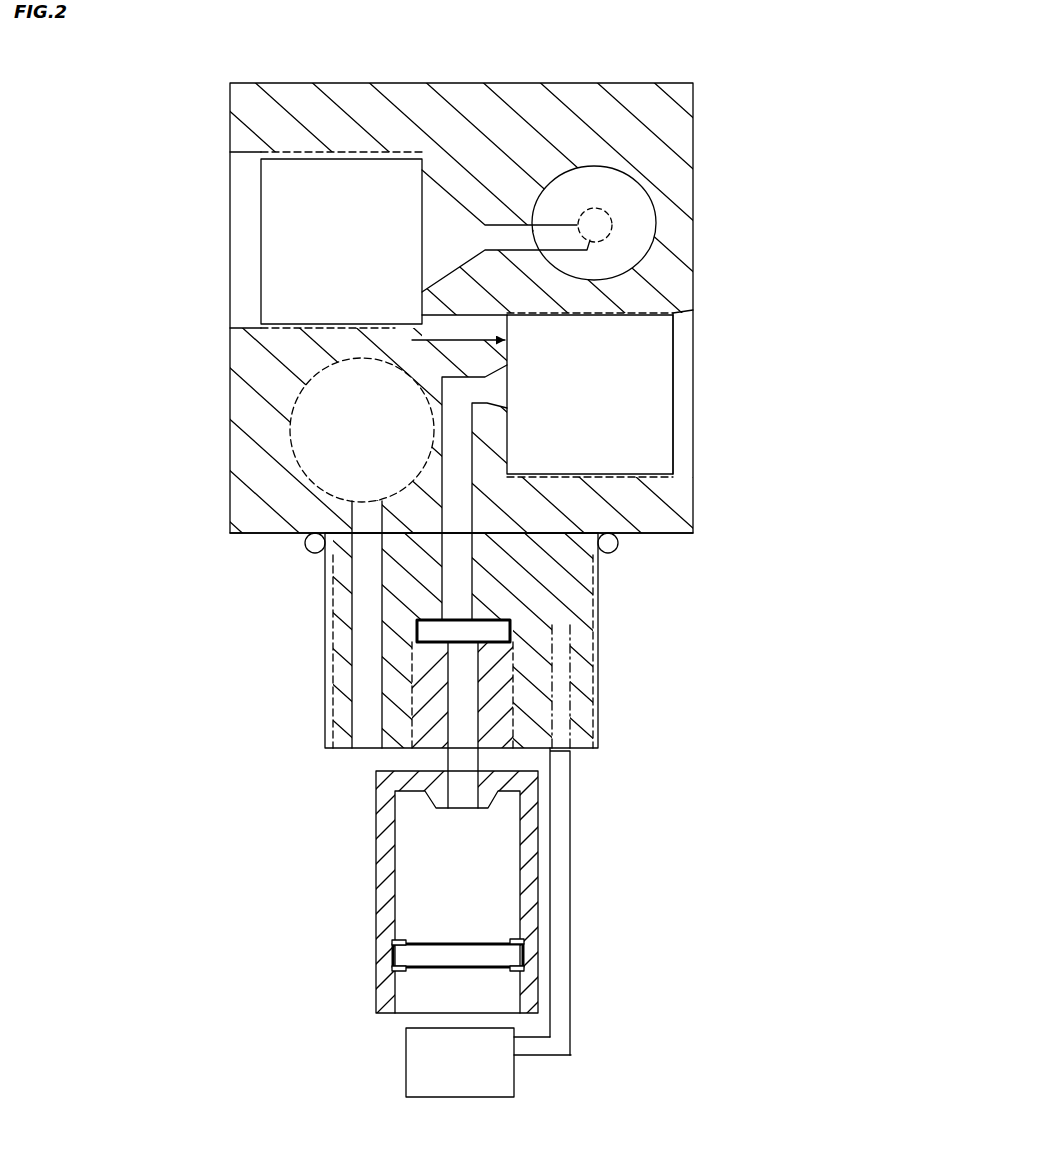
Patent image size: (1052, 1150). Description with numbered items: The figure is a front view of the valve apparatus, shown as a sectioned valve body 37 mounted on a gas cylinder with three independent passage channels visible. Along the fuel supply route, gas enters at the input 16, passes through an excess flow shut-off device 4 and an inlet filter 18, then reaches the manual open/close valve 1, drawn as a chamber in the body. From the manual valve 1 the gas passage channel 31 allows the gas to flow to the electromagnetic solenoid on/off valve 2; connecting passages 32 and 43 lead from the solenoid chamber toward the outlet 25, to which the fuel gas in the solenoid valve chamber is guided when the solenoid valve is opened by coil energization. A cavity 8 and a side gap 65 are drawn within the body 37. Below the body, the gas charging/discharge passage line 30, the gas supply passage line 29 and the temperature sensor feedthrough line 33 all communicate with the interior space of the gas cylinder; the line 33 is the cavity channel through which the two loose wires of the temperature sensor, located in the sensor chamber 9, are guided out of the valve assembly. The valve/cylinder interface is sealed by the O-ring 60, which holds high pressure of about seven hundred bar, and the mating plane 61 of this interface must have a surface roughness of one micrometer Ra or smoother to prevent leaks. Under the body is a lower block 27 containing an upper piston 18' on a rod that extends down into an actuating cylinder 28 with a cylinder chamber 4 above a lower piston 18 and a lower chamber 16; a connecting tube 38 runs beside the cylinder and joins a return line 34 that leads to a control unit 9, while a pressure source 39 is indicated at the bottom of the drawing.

The valve housing block 37 is at (692, 68).
The electromagnetic solenoid on/off valve 2 is at (285, 180).
The upper connecting passage 32 is at (450, 195).
The lower connecting passage 43 is at (505, 218).
The outlet 25 is at (647, 195).
The gas passage channel 31 is at (509, 307).
The side gap 65 is at (684, 318).
The manual open/close valve 1 is at (656, 388).
The cylindrical cavity 8 is at (302, 419).
The mating plane 61 is at (254, 531).
The O-ring 60 is at (303, 543).
The gas supply passage line 29 is at (476, 496).
The cylinder block 27 is at (601, 617).
The gas charging/discharge passage line 30 is at (349, 601).
The upper piston 18' is at (361, 714).
The temperature sensor feedthrough line 33 is at (576, 715).
The connecting tube 38 is at (572, 757).
The actuating cylinder 28 is at (526, 868).
The excess flow shut-off device 4 is at (424, 868).
The inlet filter 18 is at (542, 955).
The input 16 is at (446, 1008).
The return line 34 is at (575, 1018).
The sensor chamber 9 is at (495, 1072).
The pressure source 39 is at (387, 1092).